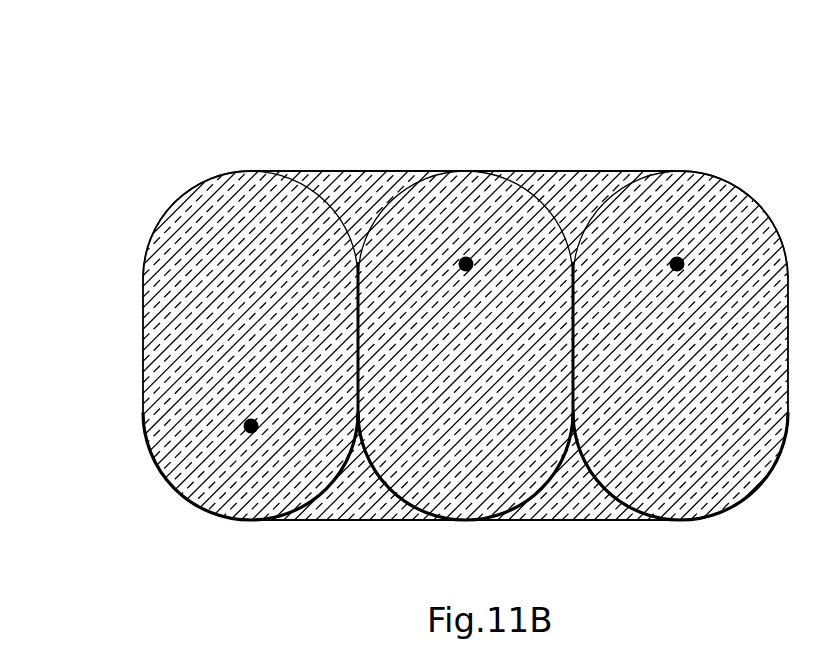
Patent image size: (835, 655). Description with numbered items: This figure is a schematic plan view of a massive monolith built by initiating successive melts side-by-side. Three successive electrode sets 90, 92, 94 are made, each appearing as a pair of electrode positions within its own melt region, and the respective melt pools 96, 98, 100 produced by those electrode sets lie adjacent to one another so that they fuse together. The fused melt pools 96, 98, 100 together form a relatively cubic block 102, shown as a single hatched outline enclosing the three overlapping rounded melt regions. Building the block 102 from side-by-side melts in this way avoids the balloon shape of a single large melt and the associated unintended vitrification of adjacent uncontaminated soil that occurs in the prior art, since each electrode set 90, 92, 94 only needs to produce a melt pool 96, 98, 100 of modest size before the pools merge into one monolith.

The cubic block 102 is at (468, 166).
The melt pool 100 is at (182, 332).
The melt pool 98 is at (517, 415).
The melt pool 96 is at (740, 438).
The electrode set 94 is at (251, 426).
The electrode set 92 is at (466, 264).
The electrode set 90 is at (677, 264).